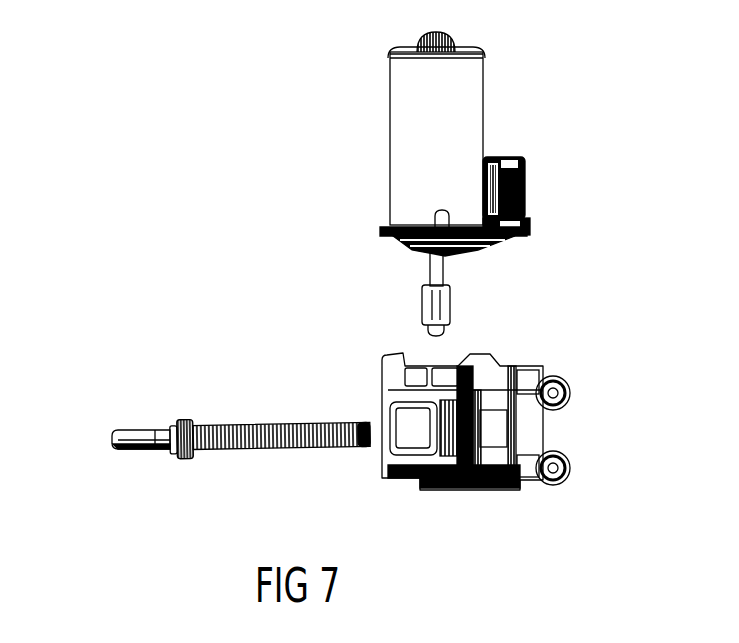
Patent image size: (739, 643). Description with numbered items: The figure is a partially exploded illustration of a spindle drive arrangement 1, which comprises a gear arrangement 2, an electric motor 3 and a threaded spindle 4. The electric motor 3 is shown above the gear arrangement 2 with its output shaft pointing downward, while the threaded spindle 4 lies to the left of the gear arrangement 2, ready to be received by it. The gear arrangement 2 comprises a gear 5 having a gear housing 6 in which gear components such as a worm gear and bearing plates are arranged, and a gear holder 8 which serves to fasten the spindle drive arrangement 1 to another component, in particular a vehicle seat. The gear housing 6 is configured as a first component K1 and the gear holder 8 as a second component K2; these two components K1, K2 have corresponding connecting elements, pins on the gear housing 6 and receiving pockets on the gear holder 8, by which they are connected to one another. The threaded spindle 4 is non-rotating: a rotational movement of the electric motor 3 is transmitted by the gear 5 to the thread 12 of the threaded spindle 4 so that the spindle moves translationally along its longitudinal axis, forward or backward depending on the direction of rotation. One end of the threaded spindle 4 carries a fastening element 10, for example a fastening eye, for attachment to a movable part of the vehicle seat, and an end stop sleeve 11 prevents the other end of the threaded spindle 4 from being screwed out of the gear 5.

The spindle drive arrangement 1 is at (625, 166).
The gear arrangement 2 is at (585, 485).
The electric motor 3 is at (417, 111).
The threaded spindle 4 is at (200, 405).
The thread 12 is at (242, 428).
The gear 5 is at (391, 436).
The gear housing 6 is at (391, 436).
The first component K1 is at (383, 462).
The gear holder 8 is at (599, 414).
The second component K2 is at (553, 393).
The fastening element 10 is at (112, 438).
The end stop sleeve 11 is at (545, 432).